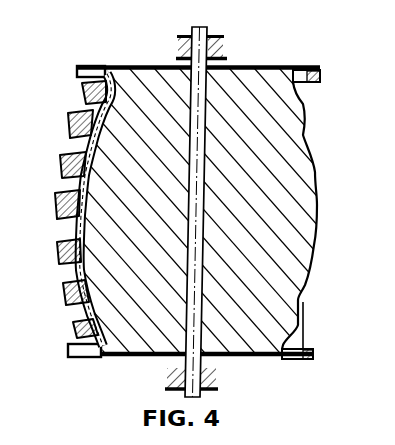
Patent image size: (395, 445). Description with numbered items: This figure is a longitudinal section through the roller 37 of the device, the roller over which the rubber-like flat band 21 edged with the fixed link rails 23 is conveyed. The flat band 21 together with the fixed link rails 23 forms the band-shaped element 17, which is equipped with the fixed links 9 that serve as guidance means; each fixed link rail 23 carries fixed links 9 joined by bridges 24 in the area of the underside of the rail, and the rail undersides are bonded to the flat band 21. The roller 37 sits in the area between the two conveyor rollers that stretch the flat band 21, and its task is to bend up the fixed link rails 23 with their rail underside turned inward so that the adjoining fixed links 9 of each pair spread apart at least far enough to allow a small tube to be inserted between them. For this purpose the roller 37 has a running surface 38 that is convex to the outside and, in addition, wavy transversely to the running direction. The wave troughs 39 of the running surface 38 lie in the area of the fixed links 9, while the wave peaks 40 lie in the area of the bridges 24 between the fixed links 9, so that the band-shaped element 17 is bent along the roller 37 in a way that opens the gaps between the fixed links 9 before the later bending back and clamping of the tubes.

The fixed links 9 is at (69, 121).
The band-shaped element 17 is at (89, 107).
The rubber-like flat band 21 is at (56, 186).
The fixed link rails 23 is at (86, 88).
The bridges 24 is at (79, 143).
The roller 37 is at (252, 92).
The running surface 38 is at (87, 198).
The wave troughs 39 is at (303, 134).
The wave peaks 40 is at (302, 82).